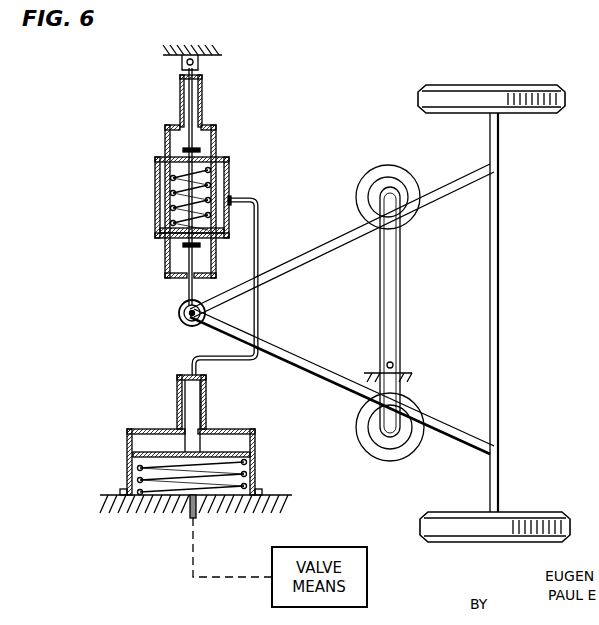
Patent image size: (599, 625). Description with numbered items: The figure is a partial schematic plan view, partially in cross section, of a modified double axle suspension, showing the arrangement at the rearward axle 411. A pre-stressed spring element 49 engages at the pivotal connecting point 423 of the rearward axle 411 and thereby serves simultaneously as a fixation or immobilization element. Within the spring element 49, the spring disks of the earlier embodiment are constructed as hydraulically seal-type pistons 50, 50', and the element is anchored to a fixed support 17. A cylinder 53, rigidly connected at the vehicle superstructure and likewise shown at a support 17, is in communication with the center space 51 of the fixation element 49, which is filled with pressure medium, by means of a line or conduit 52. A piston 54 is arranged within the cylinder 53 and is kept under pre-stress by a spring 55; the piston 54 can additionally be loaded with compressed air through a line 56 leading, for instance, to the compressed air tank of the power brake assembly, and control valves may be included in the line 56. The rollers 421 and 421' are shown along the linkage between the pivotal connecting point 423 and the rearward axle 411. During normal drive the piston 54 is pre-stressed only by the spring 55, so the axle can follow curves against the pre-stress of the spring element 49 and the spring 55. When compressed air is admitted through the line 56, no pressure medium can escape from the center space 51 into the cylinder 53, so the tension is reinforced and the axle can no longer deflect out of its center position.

The fixed support / ground 17 is at (198, 53).
The spring element 49 is at (228, 142).
The hydraulically seal-type piston 50 is at (218, 189).
The hydraulically seal-type piston 50' is at (166, 222).
The center space 51 is at (218, 183).
The conduit 52 is at (258, 246).
The pivotal connecting point 423 is at (179, 313).
The cylinder 53 is at (258, 444).
The piston 54 is at (154, 442).
The spring 55 is at (258, 482).
The line 56 is at (189, 507).
The upper roller 421' is at (407, 199).
The lower roller 421 is at (408, 419).
The rearward axle 411 is at (500, 488).